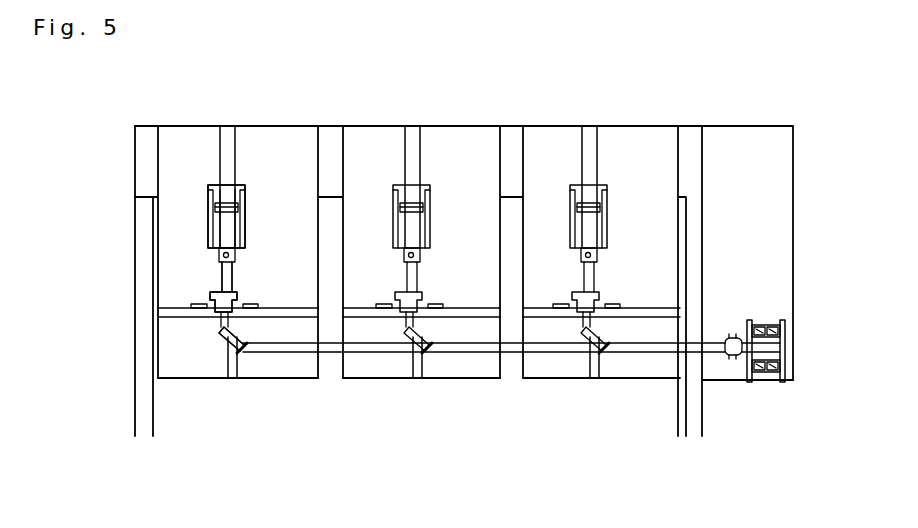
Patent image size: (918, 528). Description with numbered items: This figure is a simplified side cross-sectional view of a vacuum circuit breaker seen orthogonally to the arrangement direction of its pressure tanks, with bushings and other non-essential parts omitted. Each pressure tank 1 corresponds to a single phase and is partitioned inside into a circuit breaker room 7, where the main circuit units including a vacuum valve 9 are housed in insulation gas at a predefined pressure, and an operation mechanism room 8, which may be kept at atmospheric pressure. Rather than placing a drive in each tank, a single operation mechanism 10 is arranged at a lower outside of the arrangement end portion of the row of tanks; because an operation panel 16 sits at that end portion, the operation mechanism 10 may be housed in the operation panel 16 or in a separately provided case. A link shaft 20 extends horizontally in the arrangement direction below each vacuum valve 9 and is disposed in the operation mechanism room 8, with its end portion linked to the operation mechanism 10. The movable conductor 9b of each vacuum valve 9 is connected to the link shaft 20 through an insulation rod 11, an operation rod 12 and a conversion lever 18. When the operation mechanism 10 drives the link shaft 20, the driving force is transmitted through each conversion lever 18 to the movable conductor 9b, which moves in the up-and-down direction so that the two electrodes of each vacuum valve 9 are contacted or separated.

The pressure tank 1 is at (268, 140).
The circuit breaker room 7 is at (187, 170).
The operation mechanism room 8 is at (195, 360).
The vacuum valve 9 is at (196, 217).
The movable conductor 9b is at (223, 237).
The operation mechanism 10 is at (770, 382).
The insulation rod 11 is at (220, 275).
The operation rod 12 is at (222, 328).
The operation panel 16 is at (738, 127).
The conversion lever 18 is at (222, 342).
The link shaft 20 is at (378, 354).